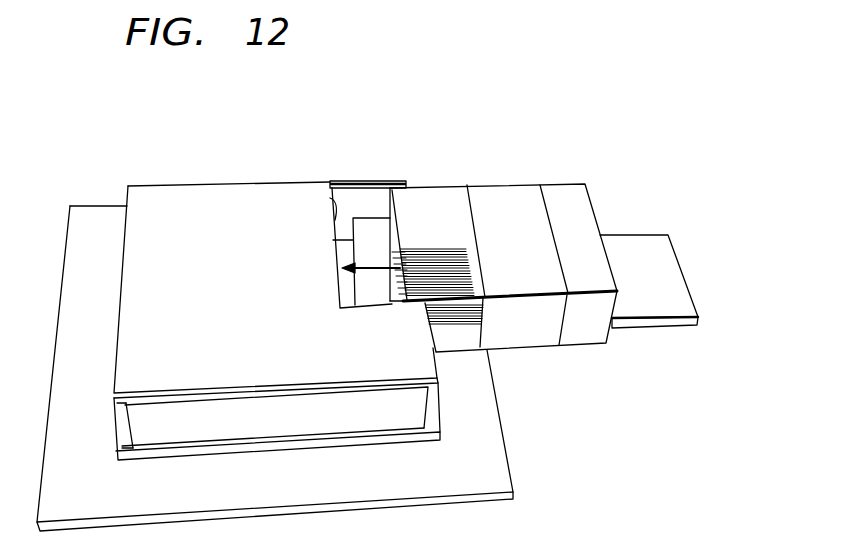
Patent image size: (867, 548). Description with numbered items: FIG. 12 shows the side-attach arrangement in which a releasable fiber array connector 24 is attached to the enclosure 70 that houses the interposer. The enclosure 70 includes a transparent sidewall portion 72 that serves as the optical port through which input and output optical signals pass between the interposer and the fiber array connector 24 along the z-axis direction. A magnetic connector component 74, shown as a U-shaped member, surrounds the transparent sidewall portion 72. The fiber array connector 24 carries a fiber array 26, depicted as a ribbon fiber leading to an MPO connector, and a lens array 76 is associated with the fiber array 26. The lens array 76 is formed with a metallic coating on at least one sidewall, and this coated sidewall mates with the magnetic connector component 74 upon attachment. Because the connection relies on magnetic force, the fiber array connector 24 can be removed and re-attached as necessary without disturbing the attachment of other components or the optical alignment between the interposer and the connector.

The fiber array connector 24 is at (557, 193).
The fiber array 26 is at (668, 282).
The enclosure 70 is at (257, 198).
The transparent sidewall portion 72 is at (333, 220).
The magnetic connector component 74 is at (338, 182).
The lens array 76 is at (357, 252).